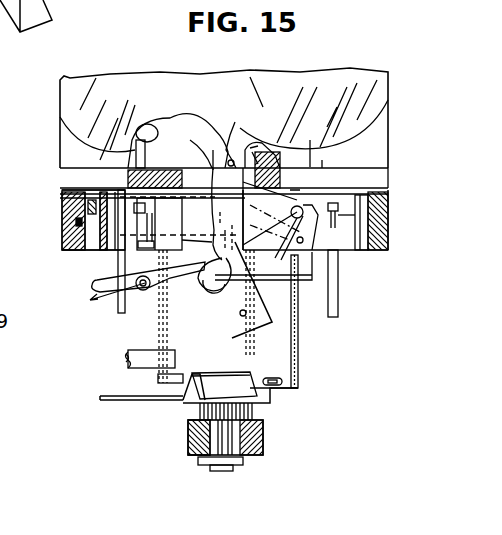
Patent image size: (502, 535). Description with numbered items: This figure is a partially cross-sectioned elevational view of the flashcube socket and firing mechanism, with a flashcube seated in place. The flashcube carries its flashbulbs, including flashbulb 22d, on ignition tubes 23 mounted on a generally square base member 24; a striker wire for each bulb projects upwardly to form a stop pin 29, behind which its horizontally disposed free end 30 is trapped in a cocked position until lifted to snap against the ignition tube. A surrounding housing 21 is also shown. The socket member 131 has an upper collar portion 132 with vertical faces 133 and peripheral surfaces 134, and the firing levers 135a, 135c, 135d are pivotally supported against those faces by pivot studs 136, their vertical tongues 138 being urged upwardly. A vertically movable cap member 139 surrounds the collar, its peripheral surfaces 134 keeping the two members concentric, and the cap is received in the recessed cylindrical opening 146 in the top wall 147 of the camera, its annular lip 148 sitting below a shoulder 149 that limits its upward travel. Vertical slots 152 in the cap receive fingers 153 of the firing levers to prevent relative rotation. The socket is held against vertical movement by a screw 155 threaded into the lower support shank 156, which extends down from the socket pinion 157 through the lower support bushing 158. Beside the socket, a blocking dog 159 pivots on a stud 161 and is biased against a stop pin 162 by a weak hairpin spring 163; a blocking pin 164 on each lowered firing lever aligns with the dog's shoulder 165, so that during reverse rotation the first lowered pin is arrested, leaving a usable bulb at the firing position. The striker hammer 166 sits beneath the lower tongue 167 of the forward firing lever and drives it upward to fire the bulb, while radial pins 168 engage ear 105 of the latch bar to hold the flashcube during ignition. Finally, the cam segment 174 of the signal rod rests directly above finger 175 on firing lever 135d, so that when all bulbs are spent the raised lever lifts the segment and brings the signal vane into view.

The glass panel 21 is at (388, 88).
The flashbulb 22d is at (196, 112).
The ignition tube 23 is at (144, 126).
The base member 24 is at (390, 180).
The stop pin 29 is at (230, 132).
The free end of striker wire 30 is at (252, 145).
The ear of latch bar 105 is at (126, 366).
The socket member 131 is at (300, 362).
The upper collar portion 132 is at (368, 186).
The vertical face 133 is at (322, 255).
The peripheral surface 134 is at (180, 221).
The firing lever 135a is at (338, 296).
The firing lever 135c is at (128, 297).
The firing lever 135d is at (262, 295).
The pivot stud 136 is at (297, 200).
The vertical tongue 138 is at (216, 152).
The cap member 139 is at (110, 188).
The recessed cylindrical opening 146 is at (64, 205).
The top wall 147 is at (62, 192).
The annular lip 148 is at (85, 250).
The shoulder 149 is at (78, 222).
The vertical slot 152 is at (345, 215).
The finger 153 is at (340, 203).
The screw 155 is at (208, 468).
The lower support shank 156 is at (264, 436).
The socket pinion 157 is at (258, 412).
The lower support bushing 158 is at (188, 440).
The blocking dog 159 is at (170, 290).
The stud 161 is at (147, 298).
The stop pin 162 is at (92, 285).
The hairpin spring 163 is at (96, 298).
The blocking pin 164 is at (231, 214).
The shoulder 165 is at (212, 242).
The striker hammer 166 is at (185, 402).
The lower tongue 167 is at (255, 362).
The radial pin 168 is at (298, 382).
The cam segment 174 is at (224, 312).
The finger 175 is at (250, 322).